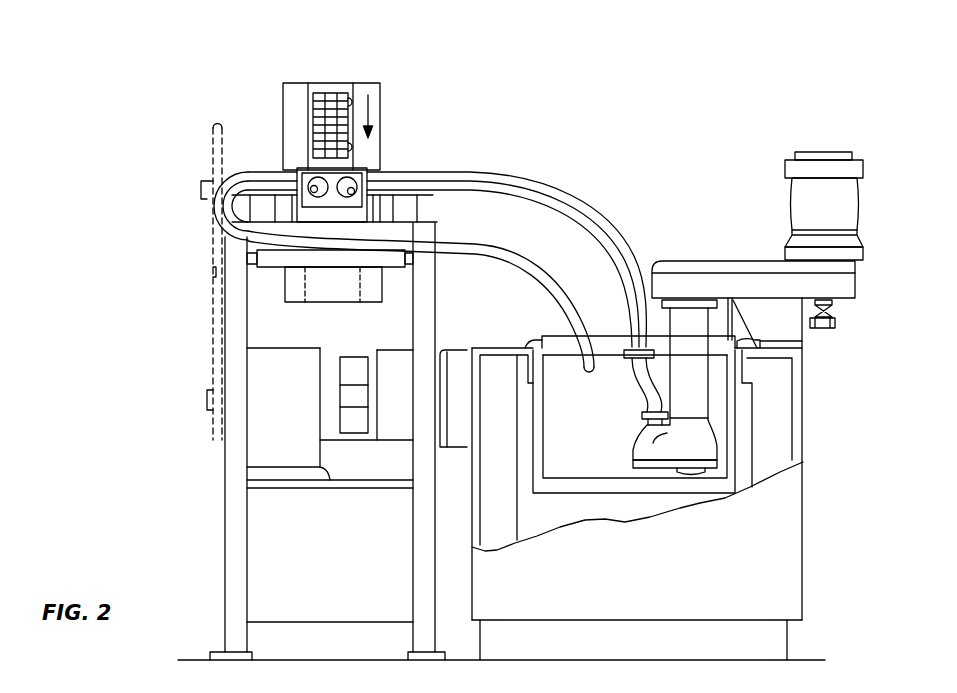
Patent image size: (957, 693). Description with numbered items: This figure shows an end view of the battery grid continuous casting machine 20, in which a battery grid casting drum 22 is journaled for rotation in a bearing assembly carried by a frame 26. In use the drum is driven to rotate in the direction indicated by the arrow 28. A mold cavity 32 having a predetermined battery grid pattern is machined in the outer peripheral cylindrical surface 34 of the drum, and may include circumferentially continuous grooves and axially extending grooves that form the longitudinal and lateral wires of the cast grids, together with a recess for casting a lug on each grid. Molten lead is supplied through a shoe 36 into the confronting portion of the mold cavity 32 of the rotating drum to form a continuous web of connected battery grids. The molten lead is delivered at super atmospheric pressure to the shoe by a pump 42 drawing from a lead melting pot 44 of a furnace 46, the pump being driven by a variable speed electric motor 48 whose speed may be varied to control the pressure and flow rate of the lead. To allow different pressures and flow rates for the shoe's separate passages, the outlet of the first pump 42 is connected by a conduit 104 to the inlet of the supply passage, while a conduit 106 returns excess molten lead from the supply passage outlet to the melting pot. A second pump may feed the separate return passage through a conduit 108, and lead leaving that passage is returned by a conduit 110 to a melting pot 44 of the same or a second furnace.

The battery grid continuous casting machine 20 is at (179, 384).
The battery grid casting drum 22 is at (275, 82).
The frame 26 is at (223, 507).
The arrow 28 is at (369, 112).
The mold cavity 32 is at (308, 109).
The outer peripheral cylindrical surface 34 is at (373, 85).
The shoe 36 is at (292, 160).
The pump 42 is at (728, 250).
The lead melting pot 44 is at (542, 329).
The furnace 46 is at (823, 455).
The variable speed electric motor 48 is at (785, 164).
The conduit 104 is at (550, 176).
The conduit 106 is at (238, 174).
The conduit 108 is at (522, 203).
The conduit 110 is at (230, 236).